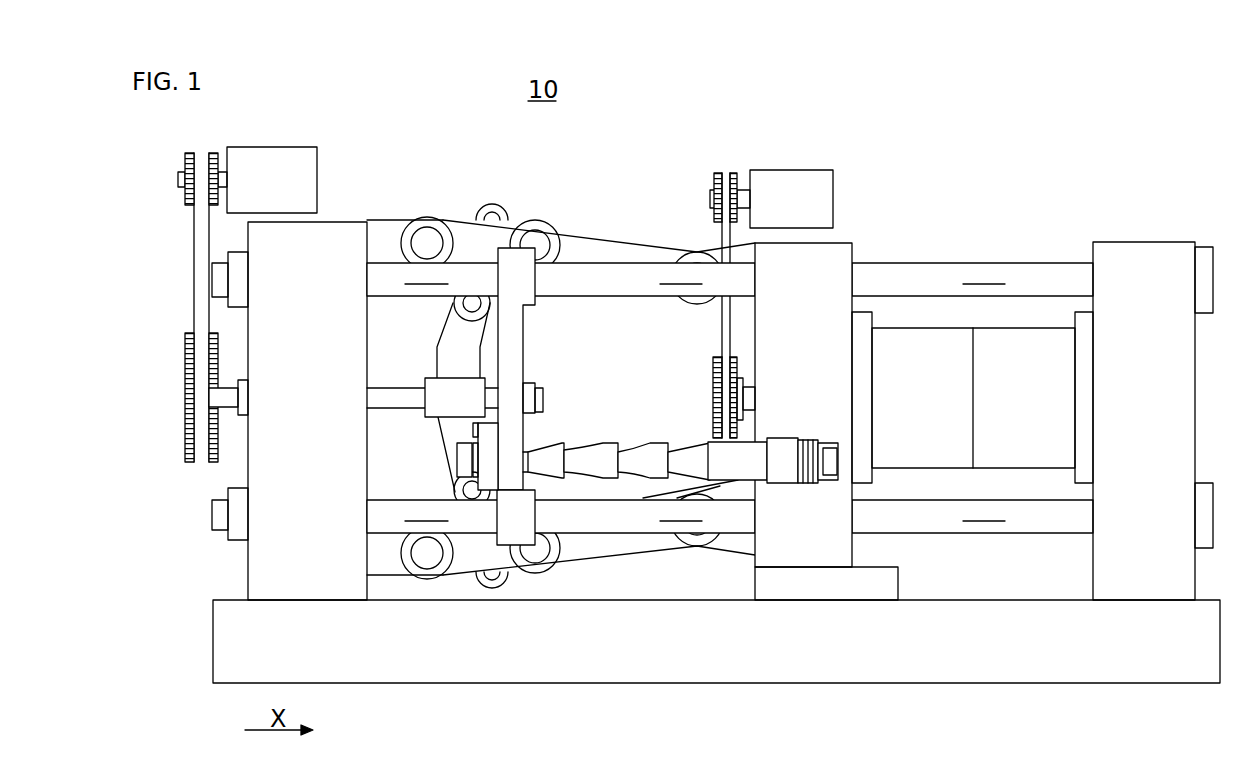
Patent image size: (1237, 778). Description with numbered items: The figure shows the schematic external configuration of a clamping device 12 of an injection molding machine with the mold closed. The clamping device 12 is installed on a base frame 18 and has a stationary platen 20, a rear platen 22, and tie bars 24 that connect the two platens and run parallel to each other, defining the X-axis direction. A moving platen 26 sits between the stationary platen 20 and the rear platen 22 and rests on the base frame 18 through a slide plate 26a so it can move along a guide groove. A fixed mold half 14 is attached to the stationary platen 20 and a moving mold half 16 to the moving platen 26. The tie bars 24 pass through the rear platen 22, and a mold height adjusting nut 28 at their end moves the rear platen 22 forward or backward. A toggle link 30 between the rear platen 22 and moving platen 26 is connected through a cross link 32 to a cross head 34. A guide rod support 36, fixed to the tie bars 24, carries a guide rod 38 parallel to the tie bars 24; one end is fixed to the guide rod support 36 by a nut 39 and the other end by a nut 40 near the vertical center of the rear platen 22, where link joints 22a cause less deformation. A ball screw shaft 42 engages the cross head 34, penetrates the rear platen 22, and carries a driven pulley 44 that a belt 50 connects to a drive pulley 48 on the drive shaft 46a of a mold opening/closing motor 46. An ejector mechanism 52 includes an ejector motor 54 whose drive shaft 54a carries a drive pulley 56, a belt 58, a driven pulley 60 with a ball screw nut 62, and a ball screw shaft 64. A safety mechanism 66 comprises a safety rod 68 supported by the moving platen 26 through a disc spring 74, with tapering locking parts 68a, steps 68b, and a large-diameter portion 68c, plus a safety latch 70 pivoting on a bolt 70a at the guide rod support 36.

The clamping device 12 is at (1070, 212).
The fixed mold half 14 is at (1035, 450).
The moving mold half 16 is at (937, 450).
The base frame 18 is at (1150, 655).
The stationary platen 20 is at (1145, 255).
The rear platen 22 is at (335, 233).
The link joints 22a is at (380, 232).
The tie bars 24 is at (970, 260).
The moving platen 26 is at (845, 247).
The slide plate 26a is at (827, 583).
The mold height adjusting nut 28 is at (238, 535).
The toggle link 30 is at (605, 248).
The cross link 32 is at (492, 204).
The cross head 34 is at (460, 338).
The guide rod support 36 is at (523, 257).
The guide rod 38 is at (382, 388).
The nut 39 is at (537, 378).
The nut 40 is at (243, 397).
The ball screw shaft 42 is at (225, 395).
The driven pulley 44 is at (185, 345).
The mold opening/closing motor 46 is at (265, 158).
The drive shaft 46a is at (178, 178).
The drive pulley 48 is at (185, 160).
The belt 50 is at (203, 236).
The ejector mechanism 52 is at (792, 152).
The ejector motor 54 is at (822, 182).
The drive shaft 54a is at (710, 198).
The drive pulley 56 is at (720, 172).
The belt 58 is at (722, 333).
The driven pulley 60 is at (713, 378).
The ball screw nut 62 is at (742, 380).
The ball screw shaft 64 is at (755, 398).
The safety mechanism 66 is at (633, 432).
The safety rod 68 is at (684, 470).
The locking parts 68a is at (660, 458).
The step 68b is at (623, 455).
The large-diameter portion 68c is at (457, 460).
The safety latch 70 is at (490, 467).
The bolt 70a is at (472, 430).
The disc spring 74 is at (805, 485).